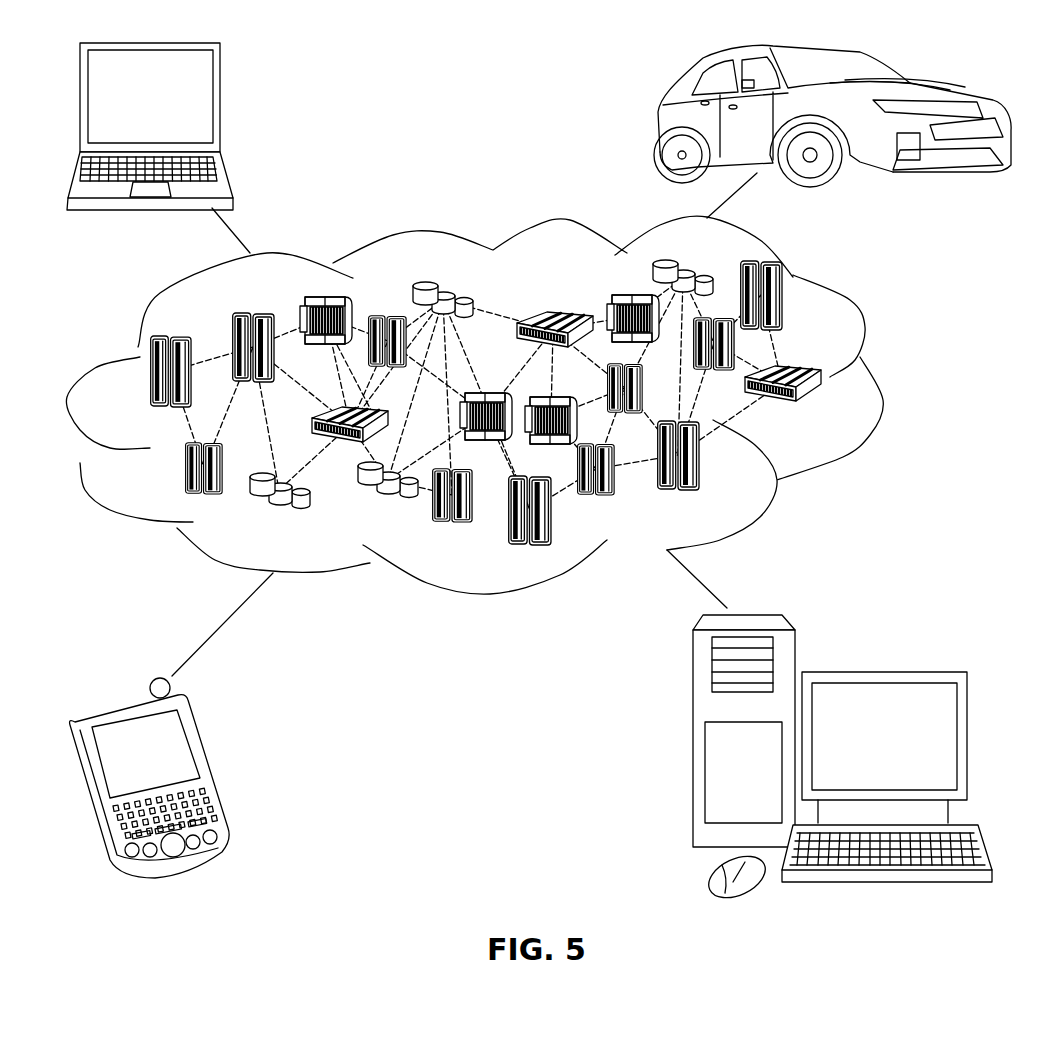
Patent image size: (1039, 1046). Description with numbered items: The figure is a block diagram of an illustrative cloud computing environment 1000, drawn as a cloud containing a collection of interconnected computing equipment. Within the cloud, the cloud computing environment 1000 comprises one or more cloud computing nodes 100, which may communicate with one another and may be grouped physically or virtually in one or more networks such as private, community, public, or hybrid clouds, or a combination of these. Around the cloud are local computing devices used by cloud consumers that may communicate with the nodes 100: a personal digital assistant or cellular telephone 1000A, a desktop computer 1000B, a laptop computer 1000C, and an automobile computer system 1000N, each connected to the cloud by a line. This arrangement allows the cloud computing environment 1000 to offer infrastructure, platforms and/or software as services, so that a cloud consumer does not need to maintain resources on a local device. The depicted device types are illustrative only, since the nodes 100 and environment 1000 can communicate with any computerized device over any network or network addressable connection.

The cloud computing environment 1000 is at (882, 378).
The cloud computing nodes 100 is at (826, 413).
The personal digital assistant (PDA) or cellular telephone 1000A is at (210, 767).
The desktop computer 1000B is at (882, 670).
The laptop computer 1000C is at (222, 105).
The automobile computer system 1000N is at (659, 122).